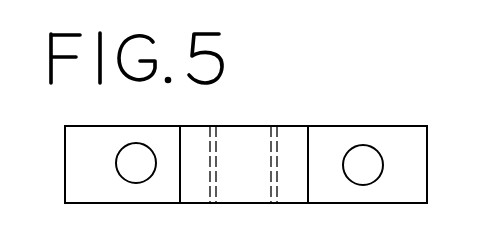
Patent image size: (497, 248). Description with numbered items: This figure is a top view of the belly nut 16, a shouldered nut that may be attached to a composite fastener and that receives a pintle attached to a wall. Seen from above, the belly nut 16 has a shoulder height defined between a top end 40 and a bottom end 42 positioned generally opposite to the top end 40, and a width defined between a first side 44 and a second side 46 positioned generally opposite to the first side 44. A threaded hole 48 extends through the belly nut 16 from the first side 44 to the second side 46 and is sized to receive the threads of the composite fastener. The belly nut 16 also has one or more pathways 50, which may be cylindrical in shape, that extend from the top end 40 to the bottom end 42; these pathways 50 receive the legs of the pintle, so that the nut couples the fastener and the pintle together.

The belly nut 16 is at (322, 203).
The top end 40 is at (101, 185).
The bottom end 42 is at (167, 180).
The first side 44 is at (402, 203).
The second side 46 is at (340, 126).
The threaded hole 48 is at (241, 148).
The pathways 50 is at (121, 146).